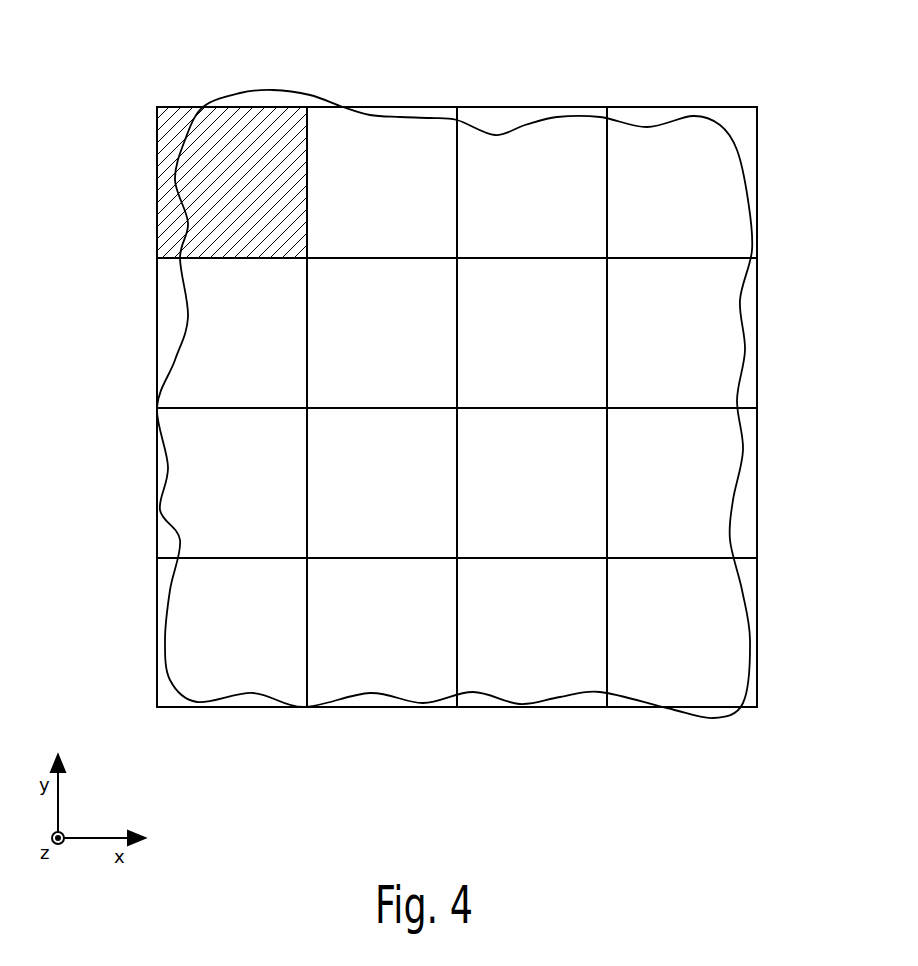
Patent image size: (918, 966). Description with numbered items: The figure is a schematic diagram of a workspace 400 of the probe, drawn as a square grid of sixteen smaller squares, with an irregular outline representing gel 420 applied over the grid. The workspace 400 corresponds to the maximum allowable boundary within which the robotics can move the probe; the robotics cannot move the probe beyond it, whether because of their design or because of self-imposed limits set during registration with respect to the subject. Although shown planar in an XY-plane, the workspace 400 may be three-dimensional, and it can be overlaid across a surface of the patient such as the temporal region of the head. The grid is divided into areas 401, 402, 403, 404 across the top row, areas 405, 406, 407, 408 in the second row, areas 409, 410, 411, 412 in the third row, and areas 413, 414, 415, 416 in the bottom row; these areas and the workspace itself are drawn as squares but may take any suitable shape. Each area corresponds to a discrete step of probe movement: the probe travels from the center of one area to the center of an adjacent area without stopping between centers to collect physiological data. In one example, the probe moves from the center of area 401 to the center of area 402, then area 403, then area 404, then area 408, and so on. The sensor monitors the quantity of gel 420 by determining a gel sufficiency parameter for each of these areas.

The workspace 400 is at (710, 107).
The gel 420 is at (479, 126).
The area 401 is at (248, 194).
The area 402 is at (398, 194).
The area 403 is at (548, 194).
The area 404 is at (698, 194).
The area 405 is at (248, 344).
The area 406 is at (398, 344).
The area 407 is at (548, 344).
The area 408 is at (698, 344).
The area 409 is at (248, 494).
The area 410 is at (398, 494).
The area 411 is at (548, 494).
The area 412 is at (698, 494).
The area 413 is at (248, 644).
The area 414 is at (398, 644).
The area 415 is at (548, 644).
The area 416 is at (698, 644).